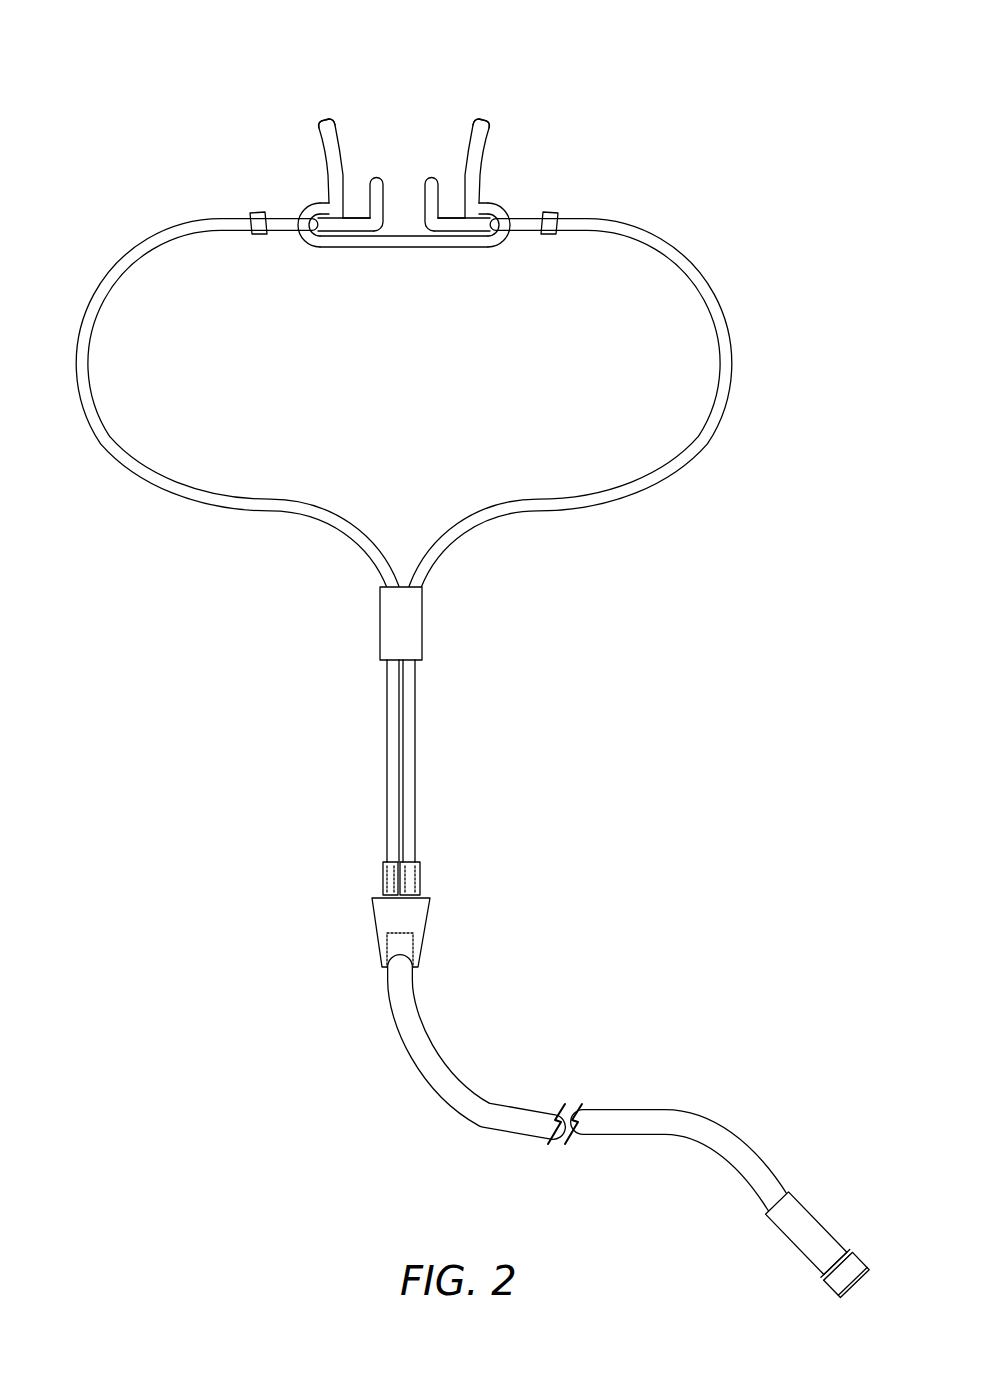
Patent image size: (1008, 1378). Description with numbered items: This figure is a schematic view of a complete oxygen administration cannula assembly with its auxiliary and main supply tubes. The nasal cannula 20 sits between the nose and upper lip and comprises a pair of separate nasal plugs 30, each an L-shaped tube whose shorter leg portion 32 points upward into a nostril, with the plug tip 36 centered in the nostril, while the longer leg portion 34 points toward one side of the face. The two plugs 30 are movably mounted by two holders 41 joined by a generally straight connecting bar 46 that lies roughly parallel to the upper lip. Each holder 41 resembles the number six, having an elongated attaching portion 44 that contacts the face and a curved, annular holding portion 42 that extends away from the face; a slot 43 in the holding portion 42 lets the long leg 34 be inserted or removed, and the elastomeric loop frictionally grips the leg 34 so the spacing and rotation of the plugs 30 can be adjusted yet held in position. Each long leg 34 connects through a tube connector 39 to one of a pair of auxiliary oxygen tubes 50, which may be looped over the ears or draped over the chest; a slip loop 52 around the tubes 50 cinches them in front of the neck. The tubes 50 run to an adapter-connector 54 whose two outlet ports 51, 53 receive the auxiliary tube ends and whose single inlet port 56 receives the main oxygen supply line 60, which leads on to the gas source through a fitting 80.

The nasal cannula 20 is at (471, 657).
The nasal plug 30 is at (366, 236).
The shorter leg portion 32 is at (341, 160).
The longer leg portion 34 is at (346, 229).
The plug tip 36 is at (373, 181).
The tube connector 39 is at (252, 214).
The holder 41 is at (404, 164).
The holding portion 42 is at (310, 207).
The slot 43 is at (327, 205).
The attaching portion 44 is at (322, 138).
The connecting bar 46 is at (403, 248).
The auxiliary oxygen tube 50 is at (133, 258).
The outlet port 51 is at (383, 862).
The slip loop 52 is at (422, 620).
The outlet port 53 is at (412, 880).
The adapter-connector 54 is at (398, 932).
The inlet port 56 is at (400, 950).
The main oxygen supply line 60 is at (457, 1110).
The end connector 80 is at (806, 1222).